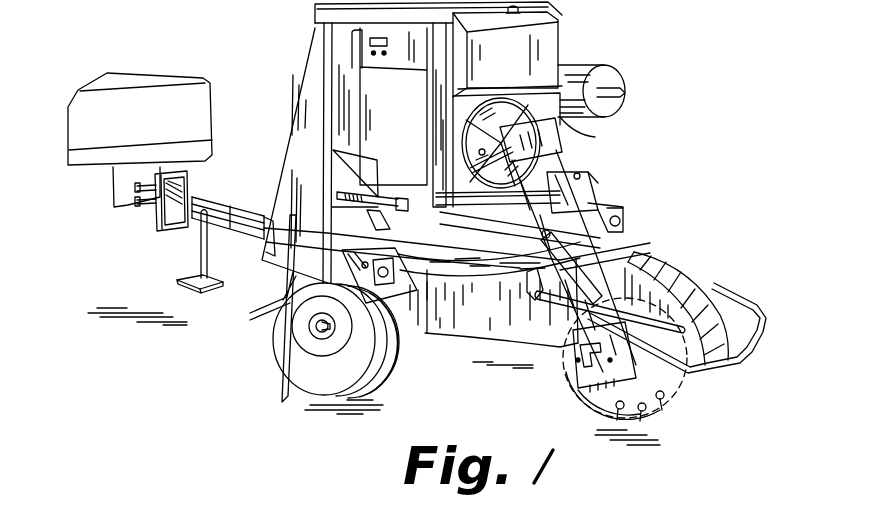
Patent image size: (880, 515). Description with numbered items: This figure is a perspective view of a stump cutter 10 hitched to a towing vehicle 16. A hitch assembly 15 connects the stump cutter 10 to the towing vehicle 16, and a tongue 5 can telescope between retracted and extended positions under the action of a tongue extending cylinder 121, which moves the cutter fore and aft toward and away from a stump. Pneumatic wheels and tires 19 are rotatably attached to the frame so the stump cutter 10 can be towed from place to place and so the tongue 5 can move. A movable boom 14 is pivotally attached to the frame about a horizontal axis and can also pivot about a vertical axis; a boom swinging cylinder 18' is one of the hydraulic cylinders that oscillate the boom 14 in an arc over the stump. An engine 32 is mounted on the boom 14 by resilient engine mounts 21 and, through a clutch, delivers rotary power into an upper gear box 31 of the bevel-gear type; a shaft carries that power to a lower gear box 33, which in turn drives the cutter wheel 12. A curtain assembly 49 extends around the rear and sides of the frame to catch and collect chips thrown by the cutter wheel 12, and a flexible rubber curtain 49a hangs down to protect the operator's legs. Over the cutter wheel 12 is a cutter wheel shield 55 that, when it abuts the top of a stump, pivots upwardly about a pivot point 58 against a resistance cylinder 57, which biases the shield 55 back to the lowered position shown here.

The stump cutter 10 is at (669, 146).
The cutter wheel 12 is at (663, 403).
The boom 14 is at (487, 218).
The hitch assembly 15 is at (139, 233).
The towing vehicle 16 is at (152, 125).
The boom swinging cylinder 18' is at (263, 212).
The pneumatic wheels and tires 19 is at (333, 388).
The resilient engine mounts 21 is at (406, 189).
The gear box 31 is at (595, 137).
The engine 32 is at (406, 115).
The lower gear box 33 is at (580, 363).
The curtain assembly 49 is at (492, 313).
The flexible rubber curtain 49a is at (288, 386).
The cutter wheel shield 55 is at (687, 267).
The resistance cylinder 57 is at (643, 253).
The pivot point 58 is at (548, 240).
The tongue extending cylinder 121 is at (231, 289).
The tongue 5 is at (185, 186).